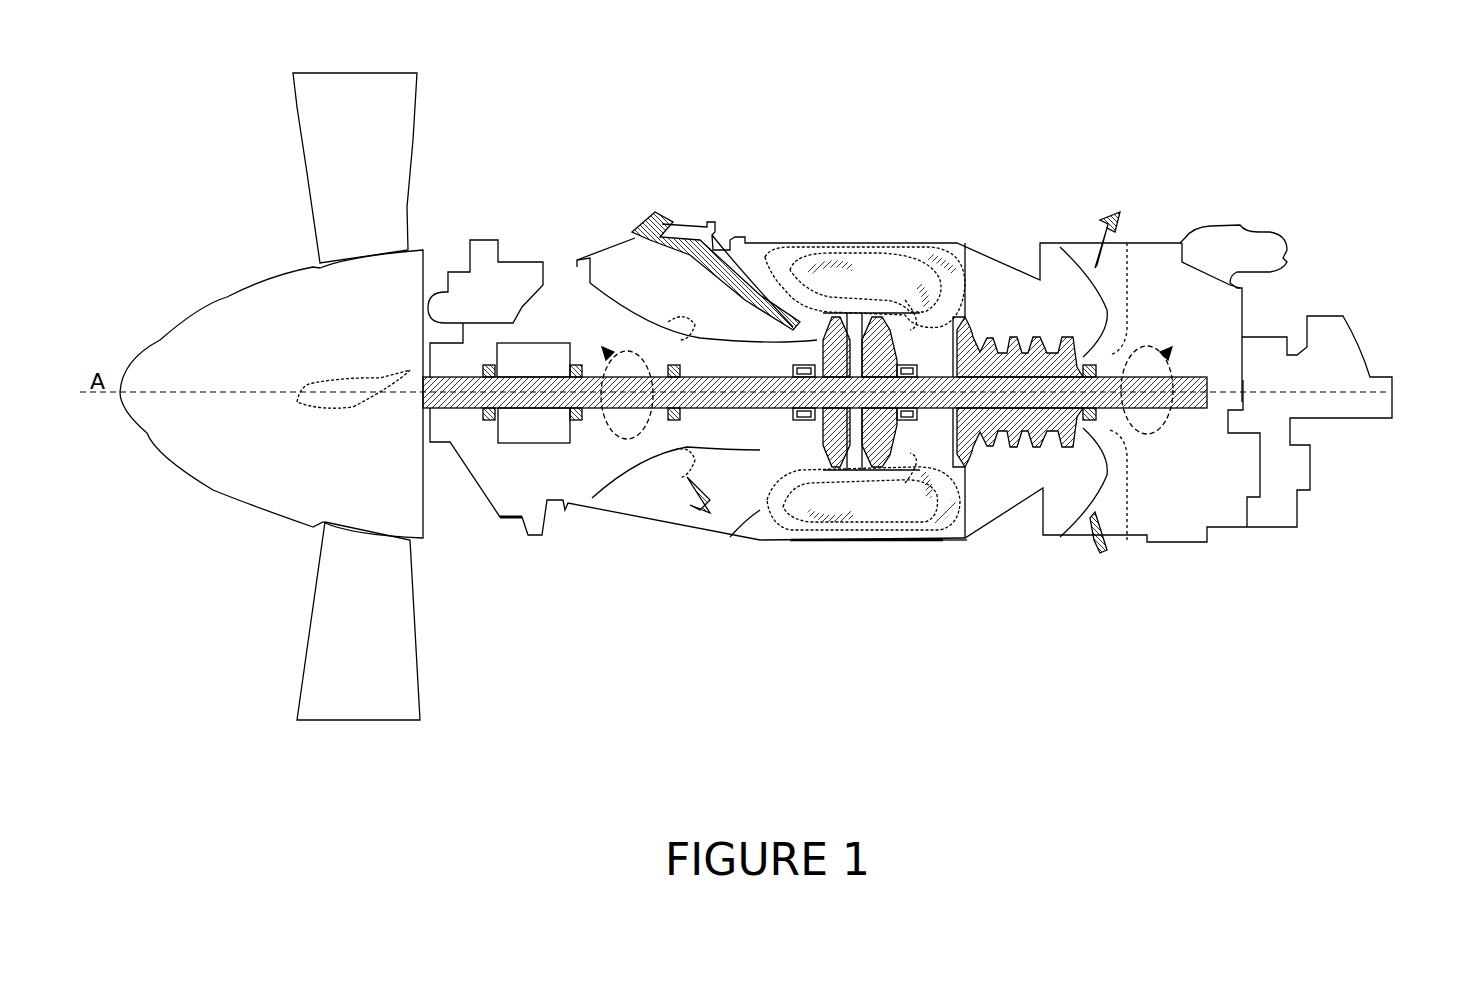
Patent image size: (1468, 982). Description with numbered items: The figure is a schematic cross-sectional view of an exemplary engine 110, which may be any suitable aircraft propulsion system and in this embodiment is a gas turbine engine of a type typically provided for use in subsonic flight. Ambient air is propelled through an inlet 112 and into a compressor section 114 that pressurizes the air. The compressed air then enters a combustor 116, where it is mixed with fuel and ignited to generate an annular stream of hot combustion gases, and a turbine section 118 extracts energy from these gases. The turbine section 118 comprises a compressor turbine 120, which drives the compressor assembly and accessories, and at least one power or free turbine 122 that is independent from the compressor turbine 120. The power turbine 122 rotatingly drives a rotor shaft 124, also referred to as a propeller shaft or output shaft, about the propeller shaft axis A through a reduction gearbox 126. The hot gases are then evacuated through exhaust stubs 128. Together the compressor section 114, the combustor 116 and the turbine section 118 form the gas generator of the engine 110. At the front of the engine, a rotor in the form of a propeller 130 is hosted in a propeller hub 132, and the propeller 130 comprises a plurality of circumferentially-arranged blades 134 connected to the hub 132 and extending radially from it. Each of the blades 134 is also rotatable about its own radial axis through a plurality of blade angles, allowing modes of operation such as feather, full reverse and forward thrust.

The engine 110 is at (774, 152).
The inlet 112 is at (1103, 239).
The compressor section 114 is at (1000, 283).
The combustor 116 is at (898, 273).
The turbine section 118 is at (860, 403).
The compressor turbine 120 is at (947, 537).
The power or free turbine 122 is at (830, 395).
The rotor shaft 124 is at (553, 433).
The reduction gearbox 126 is at (530, 382).
The exhaust stubs 128 is at (634, 225).
The propeller 130 is at (303, 252).
The propeller hub 132 is at (250, 308).
The blades 134 is at (327, 142).